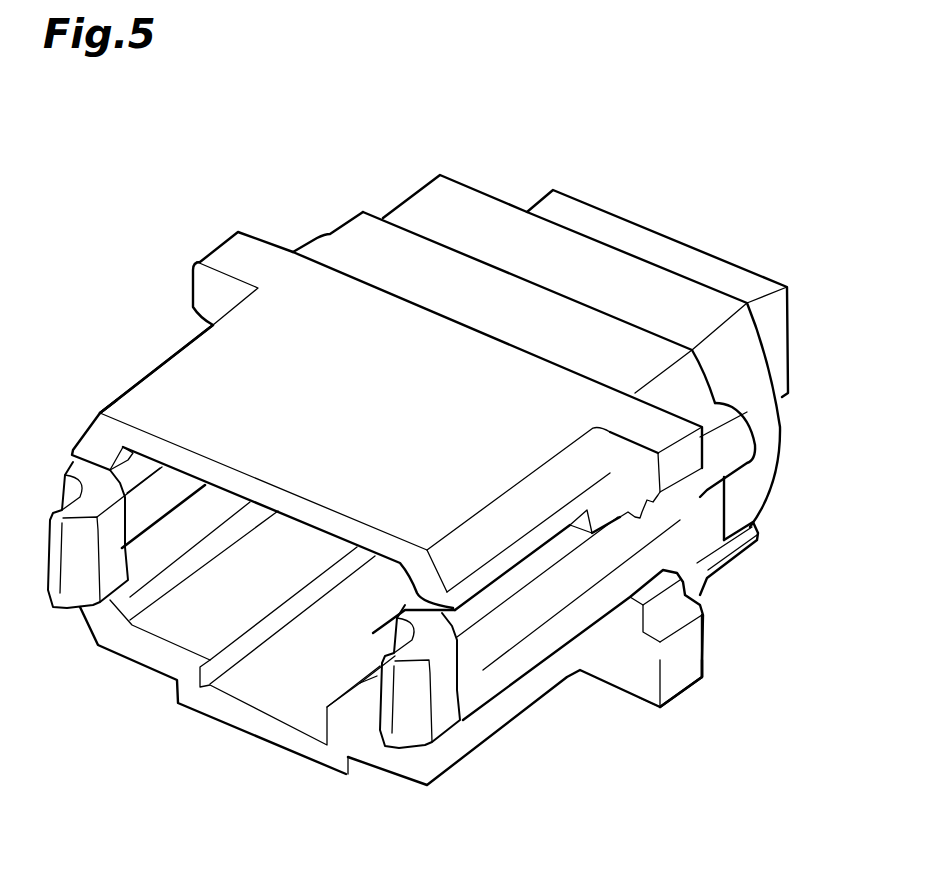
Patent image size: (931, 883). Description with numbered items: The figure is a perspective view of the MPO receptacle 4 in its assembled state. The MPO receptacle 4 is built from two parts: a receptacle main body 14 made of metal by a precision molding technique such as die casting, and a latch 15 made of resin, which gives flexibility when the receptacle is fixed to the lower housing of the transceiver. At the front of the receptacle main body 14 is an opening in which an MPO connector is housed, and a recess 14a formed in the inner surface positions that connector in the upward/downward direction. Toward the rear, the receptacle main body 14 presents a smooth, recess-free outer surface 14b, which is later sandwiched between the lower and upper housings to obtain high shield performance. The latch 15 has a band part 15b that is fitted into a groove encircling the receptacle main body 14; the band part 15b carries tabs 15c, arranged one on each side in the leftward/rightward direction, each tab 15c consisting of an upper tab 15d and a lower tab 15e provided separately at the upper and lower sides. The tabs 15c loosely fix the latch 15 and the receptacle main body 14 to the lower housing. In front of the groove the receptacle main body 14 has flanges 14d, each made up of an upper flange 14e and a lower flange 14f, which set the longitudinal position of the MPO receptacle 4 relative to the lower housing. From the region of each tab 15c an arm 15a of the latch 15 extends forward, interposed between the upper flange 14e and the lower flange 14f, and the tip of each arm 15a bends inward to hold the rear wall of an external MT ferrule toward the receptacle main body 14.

The MPO receptacle 4 is at (453, 457).
The receptacle main body 14 is at (585, 316).
The recess 14a is at (295, 677).
The outer surface 14b is at (590, 265).
The flange 14d is at (756, 740).
The upper flange 14e is at (665, 710).
The lower flange 14f is at (205, 285).
The latch 15 is at (573, 457).
The arm 15a is at (517, 627).
The band part 15b is at (417, 255).
The tab 15c is at (777, 515).
The upper tab 15d is at (808, 515).
The lower tab 15e is at (732, 453).